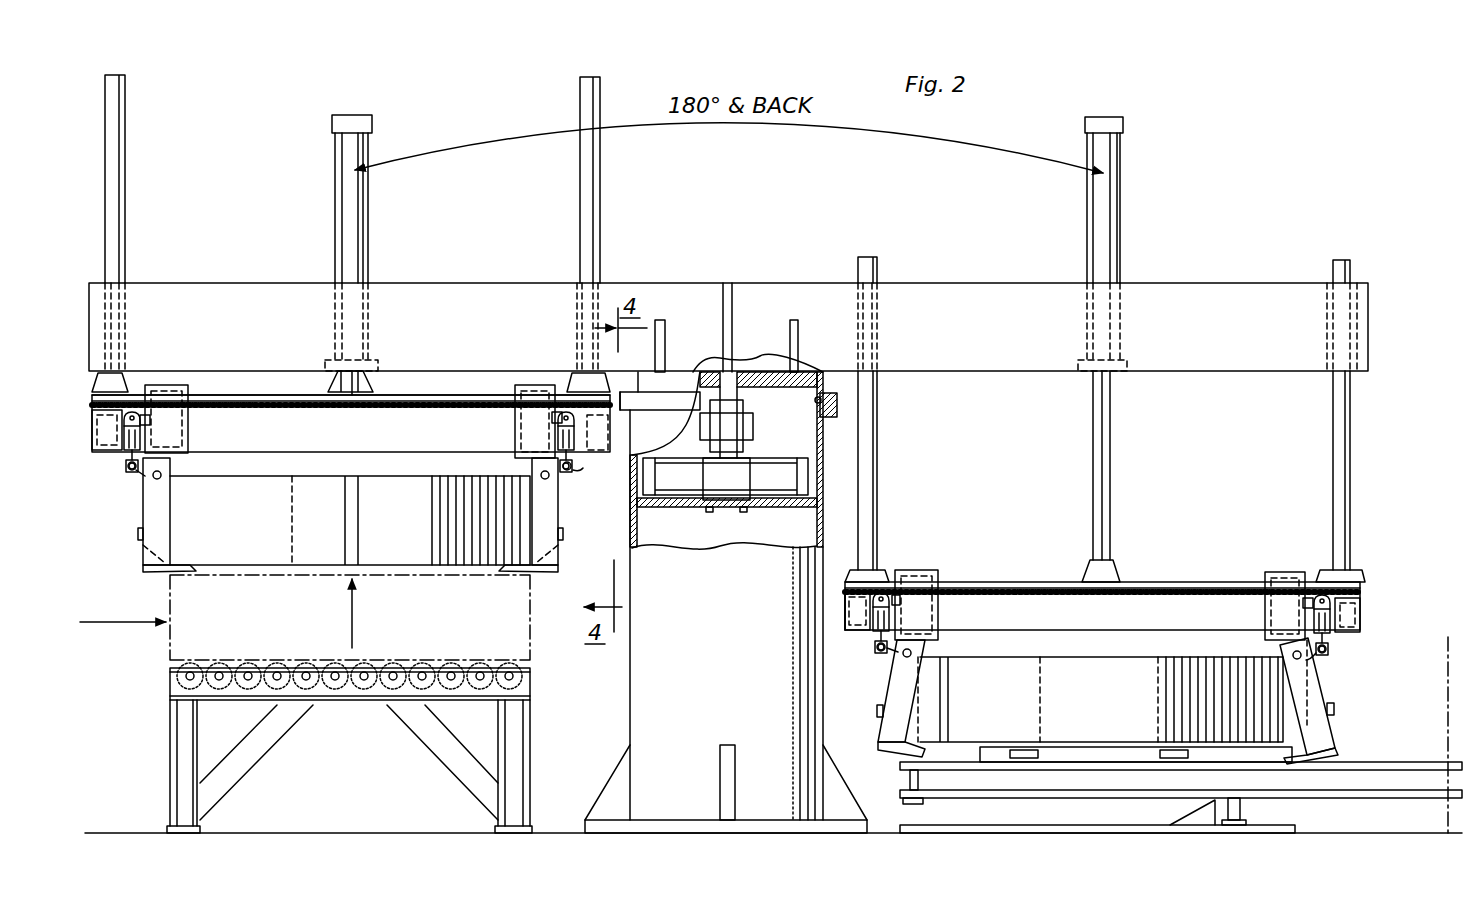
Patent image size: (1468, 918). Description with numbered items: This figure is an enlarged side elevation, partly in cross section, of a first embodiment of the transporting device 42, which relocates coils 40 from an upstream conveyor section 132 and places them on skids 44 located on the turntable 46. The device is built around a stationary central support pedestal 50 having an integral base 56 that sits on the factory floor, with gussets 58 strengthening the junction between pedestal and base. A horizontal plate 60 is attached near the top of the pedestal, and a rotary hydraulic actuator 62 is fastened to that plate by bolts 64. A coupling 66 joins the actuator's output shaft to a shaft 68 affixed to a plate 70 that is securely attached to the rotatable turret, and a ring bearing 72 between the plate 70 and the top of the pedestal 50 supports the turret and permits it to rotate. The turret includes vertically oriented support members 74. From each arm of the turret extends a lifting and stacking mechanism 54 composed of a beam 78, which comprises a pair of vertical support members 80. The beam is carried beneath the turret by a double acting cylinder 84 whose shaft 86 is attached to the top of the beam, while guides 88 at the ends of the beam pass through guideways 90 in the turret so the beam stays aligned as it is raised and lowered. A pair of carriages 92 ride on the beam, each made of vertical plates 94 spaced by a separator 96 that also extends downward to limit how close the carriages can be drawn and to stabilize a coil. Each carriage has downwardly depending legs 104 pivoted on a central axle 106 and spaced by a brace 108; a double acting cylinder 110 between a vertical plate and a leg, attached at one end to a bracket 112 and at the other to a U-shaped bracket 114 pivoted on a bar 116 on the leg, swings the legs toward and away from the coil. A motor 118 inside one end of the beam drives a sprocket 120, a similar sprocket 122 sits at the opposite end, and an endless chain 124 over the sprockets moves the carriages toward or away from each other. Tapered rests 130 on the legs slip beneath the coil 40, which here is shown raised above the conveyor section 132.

The coil 40 is at (258, 527).
The transporting device 42 is at (1182, 250).
The skid 44 is at (1008, 764).
The turntable 46 is at (1120, 785).
The central support pedestal 50 is at (714, 591).
The lifting and stacking mechanism 54 is at (397, 388).
The base 56 is at (663, 820).
The gusset 58 is at (855, 805).
The horizontal plate 60 is at (797, 510).
The rotary hydraulic actuator 62 is at (770, 468).
The bolt 64 is at (710, 512).
The coupling 66 is at (746, 427).
The shaft 68 is at (735, 385).
The plate 70 is at (676, 386).
The ring bearing 72 is at (838, 402).
The vertically oriented support member 74 is at (777, 292).
The beam 78 is at (464, 398).
The vertical support member 80 is at (392, 437).
The double acting cylinder 84 is at (338, 212).
The shaft 86 is at (338, 383).
The guide 88 is at (115, 181).
The guideway 90 is at (130, 315).
The carriage 92 is at (193, 386).
The vertical plate 94 is at (187, 418).
The separator 96 is at (552, 574).
The leg 104 is at (150, 510).
The central axle 106 is at (162, 478).
The brace 108 is at (138, 536).
The double acting cylinder 110 is at (142, 440).
The bracket 112 is at (138, 417).
The U-shaped bracket 114 is at (125, 466).
The bar 116 is at (138, 478).
The motor 118 is at (845, 655).
The sprocket 120 is at (612, 410).
The sprocket 122 is at (120, 403).
The endless chain 124 is at (285, 407).
The rest 130 is at (155, 575).
The conveyor section 132 is at (170, 752).